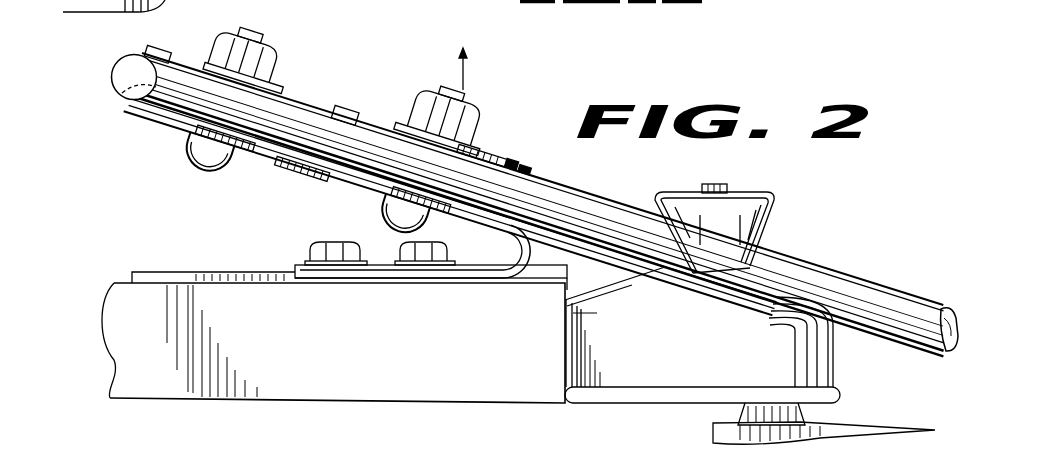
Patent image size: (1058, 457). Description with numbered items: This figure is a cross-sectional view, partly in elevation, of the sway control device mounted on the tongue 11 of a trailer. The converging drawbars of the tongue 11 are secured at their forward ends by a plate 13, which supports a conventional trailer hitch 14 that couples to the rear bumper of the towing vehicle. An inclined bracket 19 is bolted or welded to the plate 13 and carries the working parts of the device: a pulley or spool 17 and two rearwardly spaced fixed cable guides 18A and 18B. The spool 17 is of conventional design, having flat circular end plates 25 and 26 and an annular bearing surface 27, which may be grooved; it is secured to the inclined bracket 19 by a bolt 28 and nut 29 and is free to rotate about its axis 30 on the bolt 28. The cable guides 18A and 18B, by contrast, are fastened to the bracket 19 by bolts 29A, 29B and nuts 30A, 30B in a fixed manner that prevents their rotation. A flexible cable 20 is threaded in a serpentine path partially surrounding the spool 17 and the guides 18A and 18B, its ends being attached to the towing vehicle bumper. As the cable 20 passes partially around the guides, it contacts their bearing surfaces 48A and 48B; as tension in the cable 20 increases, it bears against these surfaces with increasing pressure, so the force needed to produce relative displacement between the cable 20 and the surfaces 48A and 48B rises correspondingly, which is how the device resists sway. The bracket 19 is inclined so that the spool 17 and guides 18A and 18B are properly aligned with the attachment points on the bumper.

The tongue 11 is at (358, 360).
The plate 13 is at (196, 272).
The trailer hitch 14 is at (832, 355).
The spool 17 is at (493, 153).
The cable guide 18A is at (273, 184).
The cable guide 18B is at (305, 185).
The inclined bracket 19 is at (283, 170).
The flexible cable 20 is at (832, 270).
The end plate 25 is at (523, 170).
The end plate 26 is at (520, 232).
The annular bearing surface 27 is at (330, 125).
The bolt 28 is at (468, 103).
The nut 29 is at (416, 100).
The bolt 29A is at (273, 21).
The bolt 29B is at (254, 33).
The axis 30 is at (463, 70).
The nut 30A is at (283, 61).
The nut 30B is at (273, 62).
The bearing surface 48A is at (117, 105).
The bearing surface 48B is at (124, 91).